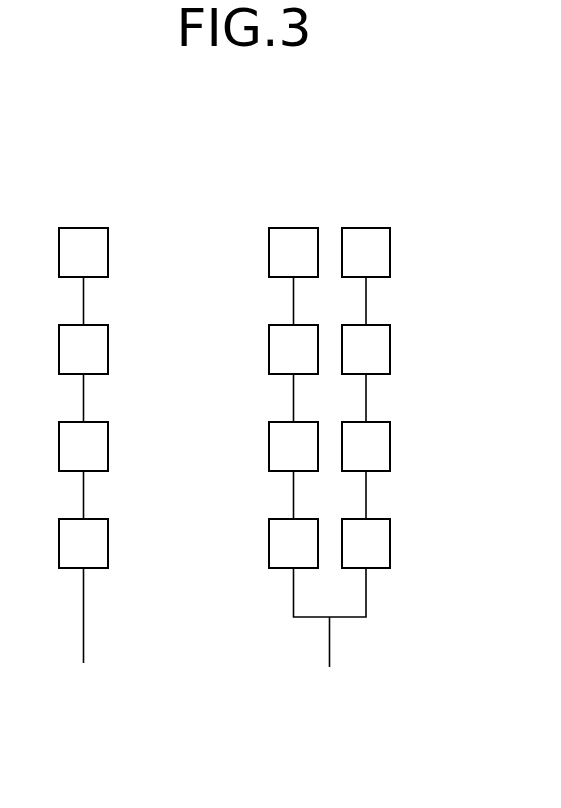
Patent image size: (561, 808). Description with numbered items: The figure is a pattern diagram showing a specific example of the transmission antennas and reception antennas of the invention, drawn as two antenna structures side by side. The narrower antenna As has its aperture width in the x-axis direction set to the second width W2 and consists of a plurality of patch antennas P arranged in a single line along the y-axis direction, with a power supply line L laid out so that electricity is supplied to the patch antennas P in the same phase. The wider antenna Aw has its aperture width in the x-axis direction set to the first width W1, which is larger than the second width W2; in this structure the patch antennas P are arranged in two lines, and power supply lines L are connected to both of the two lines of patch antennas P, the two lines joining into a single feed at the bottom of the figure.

The series-connected antenna array As is at (142, 156).
The parallel-connected antenna array Aw is at (388, 164).
The patch antenna P is at (93, 350).
The power supply line L is at (84, 630).
The second width W2 is at (108, 220).
The first width W1 is at (270, 220).